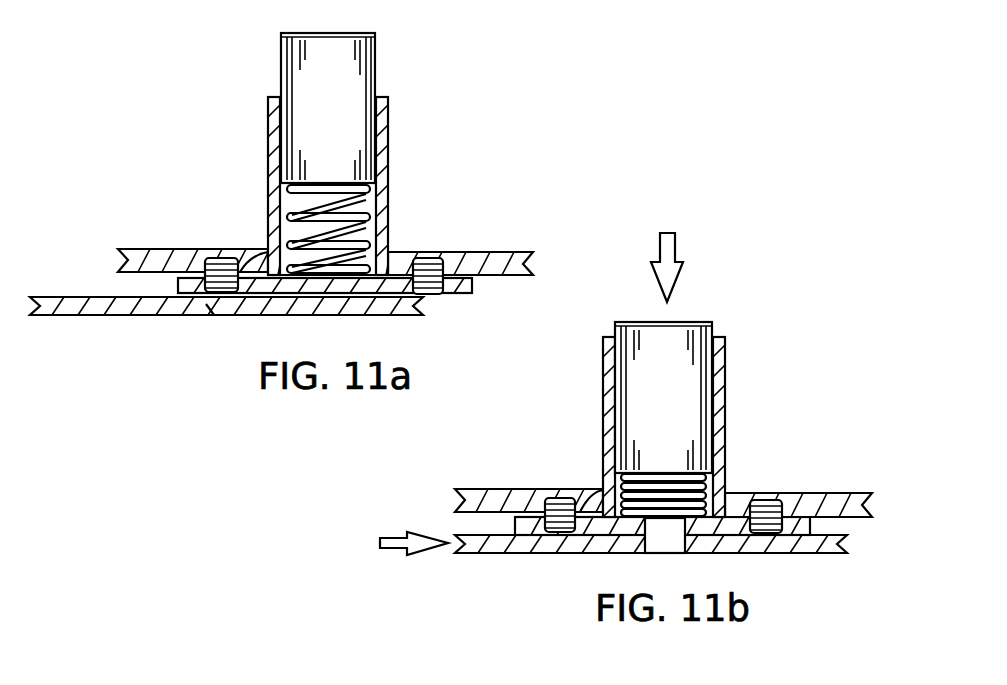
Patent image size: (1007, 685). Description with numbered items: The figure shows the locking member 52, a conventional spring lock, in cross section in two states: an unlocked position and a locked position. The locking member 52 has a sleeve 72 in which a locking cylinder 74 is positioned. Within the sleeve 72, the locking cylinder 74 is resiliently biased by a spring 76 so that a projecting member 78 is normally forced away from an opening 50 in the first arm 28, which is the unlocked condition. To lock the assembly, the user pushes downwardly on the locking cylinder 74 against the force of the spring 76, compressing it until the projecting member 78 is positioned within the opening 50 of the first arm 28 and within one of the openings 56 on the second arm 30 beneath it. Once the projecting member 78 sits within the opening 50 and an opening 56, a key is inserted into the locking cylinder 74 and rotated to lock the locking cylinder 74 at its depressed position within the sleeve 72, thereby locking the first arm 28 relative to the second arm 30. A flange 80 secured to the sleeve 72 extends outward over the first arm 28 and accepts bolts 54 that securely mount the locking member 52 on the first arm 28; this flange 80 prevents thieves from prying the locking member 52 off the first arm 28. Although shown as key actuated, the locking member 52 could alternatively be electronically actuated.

In FIG. 11A, the first arm 28 is at (474, 288).
In FIG. 11B, the first arm 28 is at (795, 540).
In FIG. 11A, the second arm 30 is at (62, 312).
In FIG. 11B, the second arm 30 is at (472, 556).
In FIG. 11A, the opening 50 is at (268, 272).
In FIG. 11B, the opening 50 is at (650, 505).
In FIG. 11A, the locking member 52 is at (423, 128).
In FIG. 11B, the locking member 52 is at (803, 380).
In FIG. 11A, the bolts 54 is at (208, 262).
In FIG. 11B, the bolts 54 is at (663, 515).
In FIG. 11A, the openings 56 is at (210, 313).
In FIG. 11B, the openings 56 is at (700, 556).
In FIG. 11A, the sleeve 72 is at (268, 135).
In FIG. 11B, the sleeve 72 is at (725, 390).
In FIG. 11A, the locking cylinder 74 is at (281, 62).
In FIG. 11B, the locking cylinder 74 is at (712, 330).
In FIG. 11A, the spring 76 is at (420, 236).
In FIG. 11B, the spring 76 is at (615, 540).
In FIG. 11A, the projecting member 78 is at (386, 205).
In FIG. 11B, the projecting member 78 is at (738, 500).
In FIG. 11A, the flange 80 is at (140, 249).
In FIG. 11B, the flange 80 is at (820, 493).